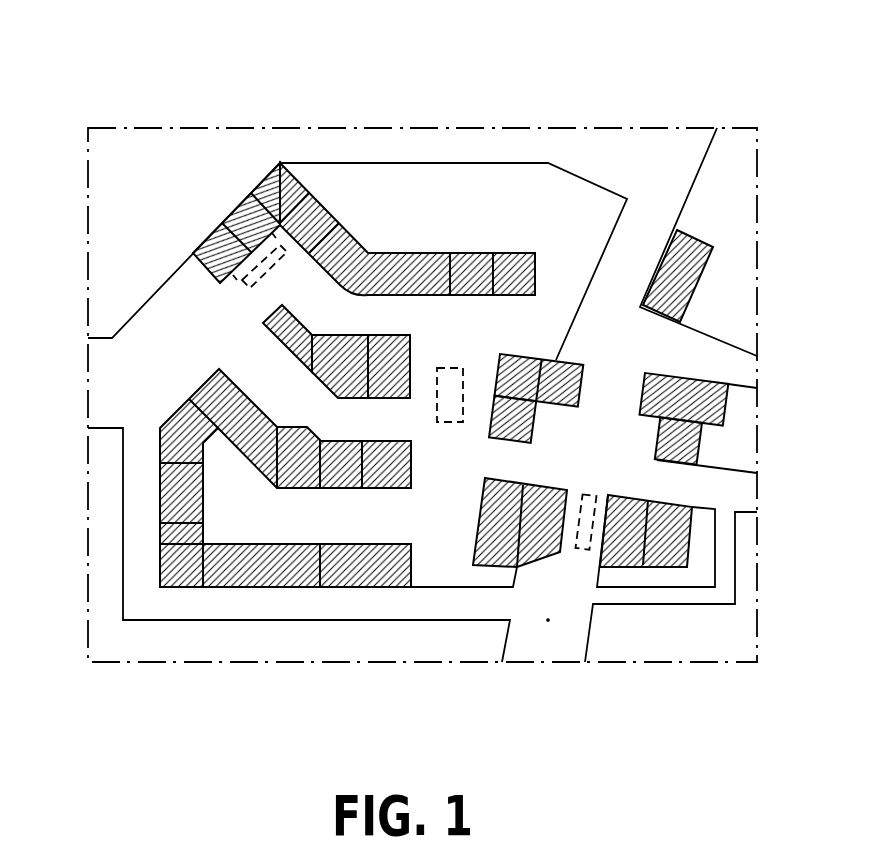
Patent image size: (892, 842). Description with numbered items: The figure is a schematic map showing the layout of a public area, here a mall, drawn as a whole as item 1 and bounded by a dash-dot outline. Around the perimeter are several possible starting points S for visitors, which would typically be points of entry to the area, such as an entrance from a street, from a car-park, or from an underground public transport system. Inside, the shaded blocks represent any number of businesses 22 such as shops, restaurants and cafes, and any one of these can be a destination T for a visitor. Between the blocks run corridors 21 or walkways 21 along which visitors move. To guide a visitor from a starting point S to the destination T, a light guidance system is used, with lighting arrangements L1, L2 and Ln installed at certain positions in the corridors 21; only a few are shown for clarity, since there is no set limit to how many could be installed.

The storage system 1 is at (571, 55).
The corridors or walkways 21 is at (363, 227).
The businesses 22 is at (368, 560).
The starting points S is at (683, 130).
The destination T is at (405, 468).
The lighting arrangement L1 is at (242, 285).
The lighting arrangement L2 is at (451, 366).
The lighting arrangement Ln is at (580, 497).